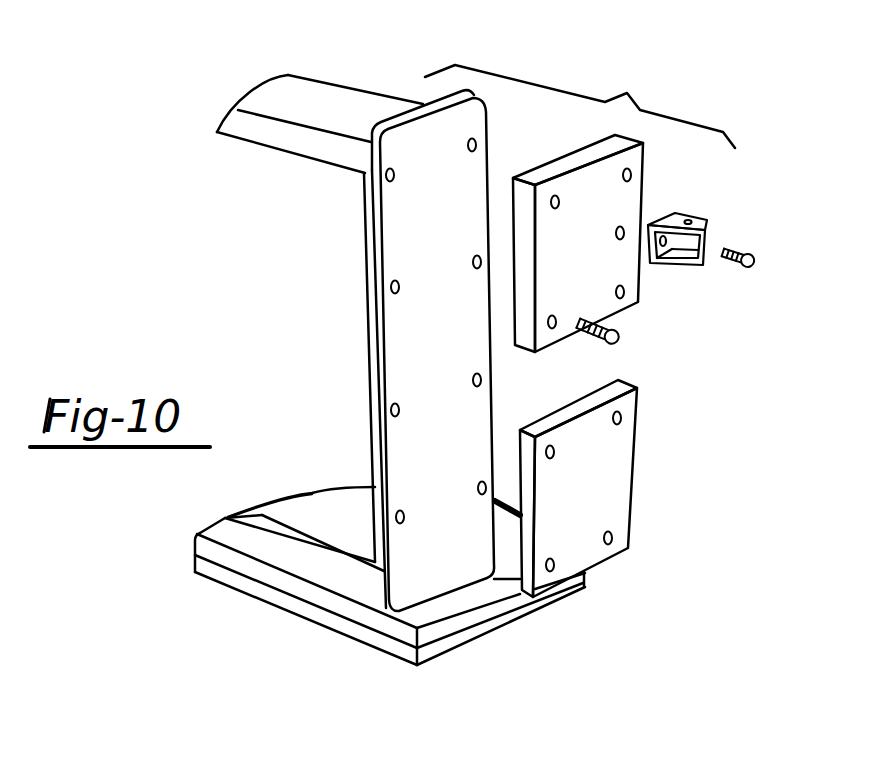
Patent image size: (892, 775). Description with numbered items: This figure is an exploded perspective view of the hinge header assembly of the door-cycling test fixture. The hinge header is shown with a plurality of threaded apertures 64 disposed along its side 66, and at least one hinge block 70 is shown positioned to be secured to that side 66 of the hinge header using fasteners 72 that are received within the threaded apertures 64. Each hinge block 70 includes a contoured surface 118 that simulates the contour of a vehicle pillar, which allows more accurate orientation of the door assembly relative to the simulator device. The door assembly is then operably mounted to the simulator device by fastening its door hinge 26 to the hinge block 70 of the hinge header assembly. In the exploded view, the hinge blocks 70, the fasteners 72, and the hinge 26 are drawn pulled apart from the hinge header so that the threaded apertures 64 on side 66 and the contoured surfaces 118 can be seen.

The threaded apertures 64 is at (397, 281).
The side 66 is at (458, 496).
The hinge block 70 is at (534, 179).
The contoured surface 118 is at (595, 288).
The hinge 26 is at (683, 215).
The fasteners 72 is at (616, 336).